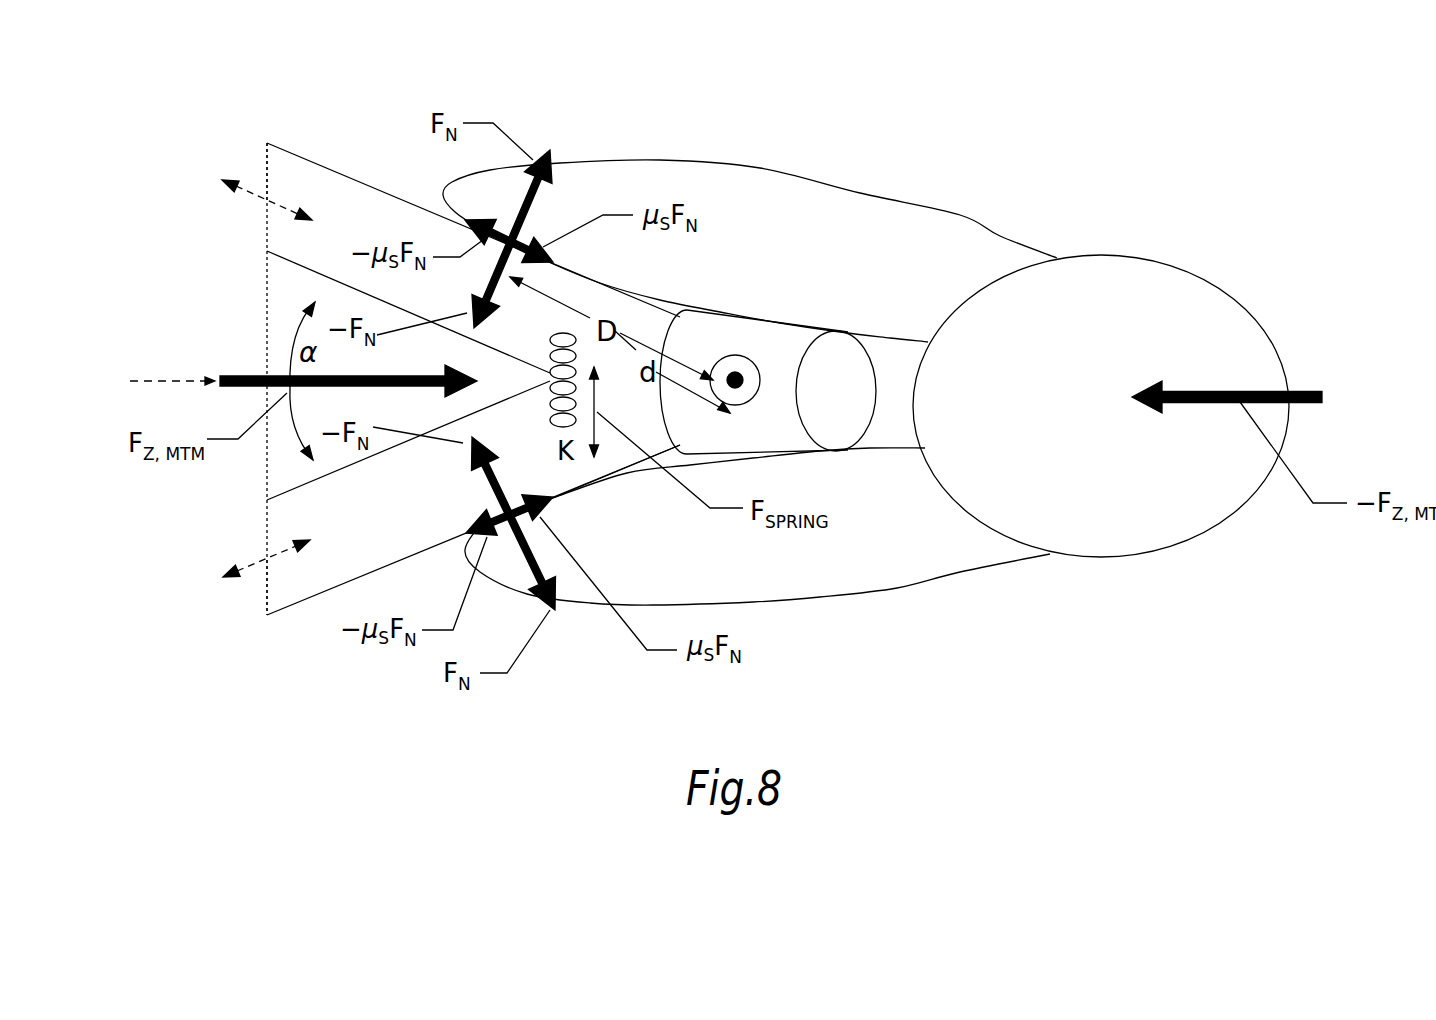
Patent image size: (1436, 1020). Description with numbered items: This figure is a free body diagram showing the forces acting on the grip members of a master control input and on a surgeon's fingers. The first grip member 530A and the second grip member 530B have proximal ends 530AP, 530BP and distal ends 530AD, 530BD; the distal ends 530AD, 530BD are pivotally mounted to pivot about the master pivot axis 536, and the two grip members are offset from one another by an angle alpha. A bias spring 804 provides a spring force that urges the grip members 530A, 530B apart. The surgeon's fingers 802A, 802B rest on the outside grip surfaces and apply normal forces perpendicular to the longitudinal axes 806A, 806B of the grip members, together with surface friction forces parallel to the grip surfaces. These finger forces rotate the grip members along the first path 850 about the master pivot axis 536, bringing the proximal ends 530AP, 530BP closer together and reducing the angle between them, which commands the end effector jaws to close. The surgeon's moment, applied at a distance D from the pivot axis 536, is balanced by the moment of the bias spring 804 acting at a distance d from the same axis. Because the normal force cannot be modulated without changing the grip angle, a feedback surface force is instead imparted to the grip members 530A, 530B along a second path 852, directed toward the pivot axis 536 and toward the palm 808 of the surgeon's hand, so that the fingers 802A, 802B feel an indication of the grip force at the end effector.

The first grip member 530A is at (342, 202).
The proximal end of first grip member 530AP is at (236, 146).
The distal end of first grip member 530AD is at (648, 322).
The second grip member 530B is at (308, 563).
The proximal end of second grip member 530BP is at (236, 613).
The distal end of second grip member 530BD is at (620, 448).
The master pivot axis 536 is at (735, 356).
The surgeon's first finger 802A is at (928, 222).
The surgeon's second finger 802B is at (942, 575).
The bias spring 804 is at (550, 366).
The longitudinal axis of first grip member 806A is at (228, 188).
The longitudinal axis of second grip member 806B is at (240, 573).
The palm of surgeon's hand 808 is at (1208, 303).
The first path 850 is at (267, 348).
The second path 852 is at (157, 380).